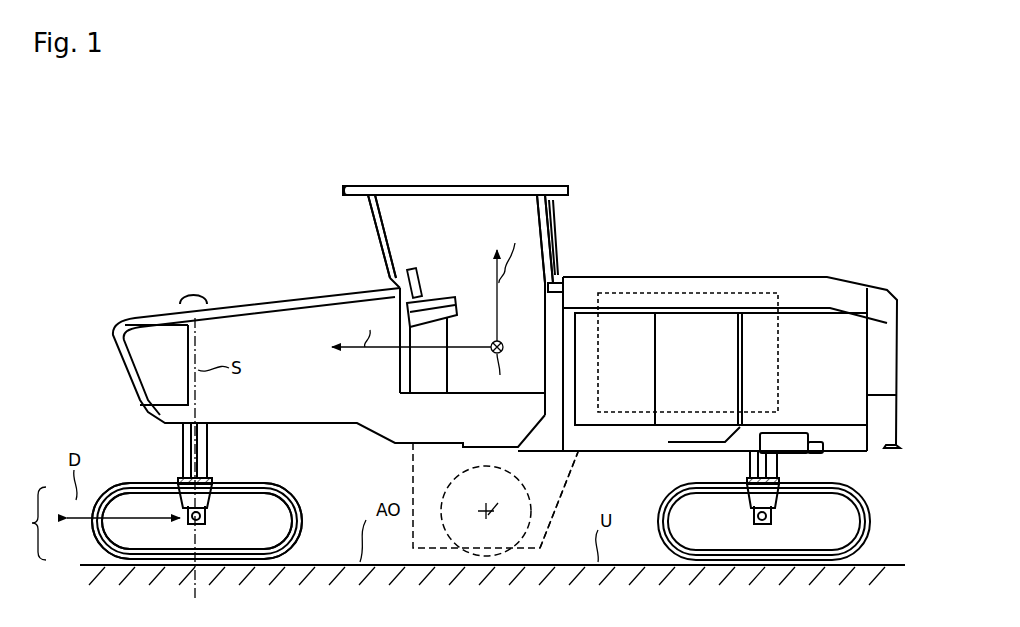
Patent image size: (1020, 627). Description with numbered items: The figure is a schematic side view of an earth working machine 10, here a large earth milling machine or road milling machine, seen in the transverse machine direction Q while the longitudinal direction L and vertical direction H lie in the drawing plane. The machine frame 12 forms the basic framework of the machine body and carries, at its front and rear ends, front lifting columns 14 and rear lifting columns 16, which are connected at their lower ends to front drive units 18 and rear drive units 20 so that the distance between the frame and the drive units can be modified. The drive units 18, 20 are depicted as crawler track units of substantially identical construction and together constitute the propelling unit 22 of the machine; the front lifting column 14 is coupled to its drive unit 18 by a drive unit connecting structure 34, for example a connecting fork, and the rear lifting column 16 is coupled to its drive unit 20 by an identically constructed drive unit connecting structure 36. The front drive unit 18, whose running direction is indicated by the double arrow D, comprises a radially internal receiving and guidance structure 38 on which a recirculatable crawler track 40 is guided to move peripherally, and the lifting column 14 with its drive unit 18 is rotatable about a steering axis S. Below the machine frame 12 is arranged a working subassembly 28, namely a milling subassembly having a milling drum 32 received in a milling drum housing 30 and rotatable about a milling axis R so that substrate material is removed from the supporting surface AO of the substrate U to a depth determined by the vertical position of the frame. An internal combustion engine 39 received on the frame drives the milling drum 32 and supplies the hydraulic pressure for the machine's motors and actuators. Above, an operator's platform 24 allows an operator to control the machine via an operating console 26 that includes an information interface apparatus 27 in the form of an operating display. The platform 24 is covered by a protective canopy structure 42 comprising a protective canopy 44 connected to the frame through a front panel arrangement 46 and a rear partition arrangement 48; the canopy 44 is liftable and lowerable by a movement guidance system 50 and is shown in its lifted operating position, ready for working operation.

The earth working machine 10 is at (760, 160).
The machine frame 12 is at (797, 290).
The front lifting columns 14 is at (212, 458).
The rear lifting columns 16 is at (780, 467).
The front drive units 18 is at (118, 482).
The rear drive units 20 is at (860, 498).
The propelling unit 22 is at (27, 523).
The operator's platform 24 is at (474, 205).
The operating console 26 is at (436, 297).
The information interface apparatus 27 is at (410, 268).
The working subassembly 28 is at (410, 488).
The milling drum housing 30 is at (563, 495).
The milling drum 32 is at (497, 467).
The drive unit connecting structure 34 is at (186, 486).
The drive unit connecting structure 36 is at (756, 487).
The receiving and guidance structure 38 is at (197, 521).
The internal combustion engine 39 is at (684, 293).
The crawler track 40 is at (288, 490).
The protective canopy structure 42 is at (340, 150).
The protective canopy 44 is at (414, 185).
The front panel arrangement 46 is at (362, 245).
The rear partition arrangement 48 is at (578, 240).
The movement guidance system 50 is at (525, 218).